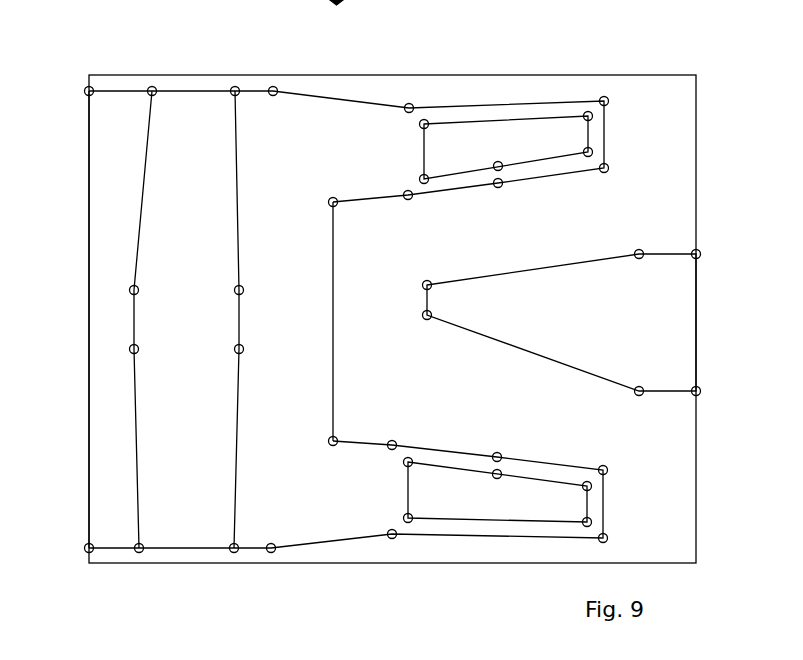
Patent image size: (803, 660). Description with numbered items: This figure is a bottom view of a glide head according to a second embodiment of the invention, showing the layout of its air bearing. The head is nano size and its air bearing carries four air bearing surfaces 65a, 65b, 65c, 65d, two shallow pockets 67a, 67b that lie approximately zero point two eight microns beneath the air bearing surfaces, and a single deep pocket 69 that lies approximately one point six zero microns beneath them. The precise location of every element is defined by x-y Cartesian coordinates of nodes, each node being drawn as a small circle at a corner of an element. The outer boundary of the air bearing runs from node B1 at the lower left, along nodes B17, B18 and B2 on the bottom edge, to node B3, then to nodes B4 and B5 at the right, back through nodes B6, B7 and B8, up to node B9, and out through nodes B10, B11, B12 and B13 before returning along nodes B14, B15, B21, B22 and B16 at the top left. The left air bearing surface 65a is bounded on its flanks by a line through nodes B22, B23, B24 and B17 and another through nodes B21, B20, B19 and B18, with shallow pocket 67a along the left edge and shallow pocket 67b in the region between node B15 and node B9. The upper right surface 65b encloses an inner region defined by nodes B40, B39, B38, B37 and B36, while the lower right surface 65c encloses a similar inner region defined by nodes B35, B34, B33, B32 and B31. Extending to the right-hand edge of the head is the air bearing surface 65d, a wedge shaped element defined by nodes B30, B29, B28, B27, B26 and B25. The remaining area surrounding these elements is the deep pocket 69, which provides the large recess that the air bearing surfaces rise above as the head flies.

The node B16 is at (70, 92).
The node B22 is at (134, 104).
The node B21 is at (220, 104).
The node B15 is at (283, 105).
The node B14 is at (415, 95).
The node B13 is at (626, 95).
The node B12 is at (622, 181).
The node B11 is at (504, 198).
The node B10 is at (417, 210).
The node B9 is at (345, 215).
The node B8 is at (345, 429).
The node B7 is at (388, 431).
The node B6 is at (498, 444).
The node B5 is at (619, 465).
The node B4 is at (617, 548).
The node B3 is at (396, 548).
The node B2 is at (273, 536).
The node B18 is at (218, 536).
The node B17 is at (157, 536).
The node B1 is at (74, 549).
The node B40 is at (404, 134).
The node B39 is at (606, 114).
The node B38 is at (606, 150).
The node B36 is at (406, 169).
The node B37 is at (499, 161).
The node B35 is at (388, 471).
The node B33 is at (605, 484).
The node B32 is at (605, 520).
The node B31 is at (388, 510).
The node B34 is at (497, 480).
The node B30 is at (407, 276).
The node B29 is at (627, 241).
The node B28 is at (717, 254).
The node B27 is at (716, 392).
The node B26 is at (637, 410).
The node B25 is at (411, 332).
The node B23 is at (156, 290).
The node B24 is at (156, 350).
The node B20 is at (260, 290).
The node B19 is at (260, 350).
The air bearing surface 65a is at (184, 162).
The air bearing surface 65b is at (459, 138).
The air bearing surface 65c is at (540, 495).
The air bearing surface 65d is at (682, 306).
The shallow pocket 67a is at (98, 173).
The shallow pocket 67b is at (327, 145).
The deep pocket 69 is at (680, 447).